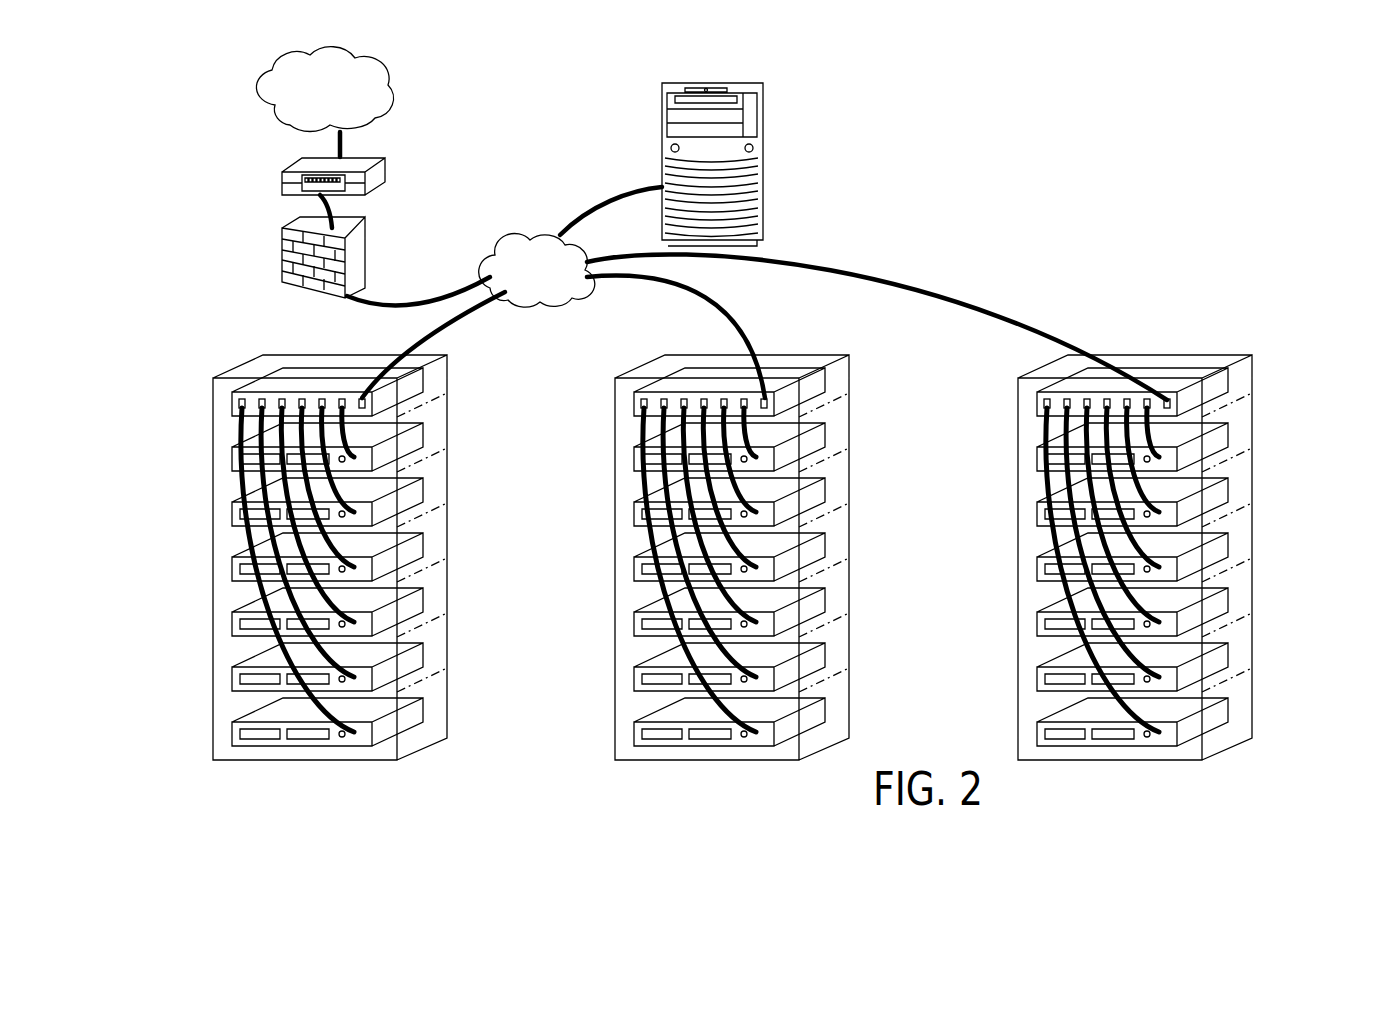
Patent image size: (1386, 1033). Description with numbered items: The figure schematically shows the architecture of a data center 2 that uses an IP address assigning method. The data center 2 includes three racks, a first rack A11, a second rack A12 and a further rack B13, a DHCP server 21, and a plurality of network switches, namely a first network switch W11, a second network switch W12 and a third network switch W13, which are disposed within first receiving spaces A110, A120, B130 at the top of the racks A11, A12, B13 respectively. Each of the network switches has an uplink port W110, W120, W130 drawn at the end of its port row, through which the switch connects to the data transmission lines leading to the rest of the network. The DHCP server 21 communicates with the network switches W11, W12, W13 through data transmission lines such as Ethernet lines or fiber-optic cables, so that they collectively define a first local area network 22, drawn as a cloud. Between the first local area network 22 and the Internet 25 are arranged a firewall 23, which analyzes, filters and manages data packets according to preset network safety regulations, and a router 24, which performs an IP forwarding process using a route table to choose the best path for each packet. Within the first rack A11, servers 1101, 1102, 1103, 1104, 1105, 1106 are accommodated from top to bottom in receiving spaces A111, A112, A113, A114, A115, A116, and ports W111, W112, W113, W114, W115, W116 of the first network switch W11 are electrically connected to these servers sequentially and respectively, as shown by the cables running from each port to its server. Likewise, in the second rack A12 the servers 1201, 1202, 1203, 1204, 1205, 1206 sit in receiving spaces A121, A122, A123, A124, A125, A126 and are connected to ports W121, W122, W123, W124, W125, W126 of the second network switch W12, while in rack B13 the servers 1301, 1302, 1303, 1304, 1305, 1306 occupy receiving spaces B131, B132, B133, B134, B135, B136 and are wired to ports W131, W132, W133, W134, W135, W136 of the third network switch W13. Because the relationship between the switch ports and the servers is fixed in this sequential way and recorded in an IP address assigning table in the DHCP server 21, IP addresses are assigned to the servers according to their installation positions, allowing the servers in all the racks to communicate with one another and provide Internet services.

The data center 2 is at (1203, 140).
The DHCP server 21 is at (764, 160).
The first local area network 22 is at (507, 244).
The firewall 23 is at (350, 238).
The router 24 is at (372, 158).
The Internet 25 is at (390, 97).
The first rack A11 is at (305, 760).
The second rack A12 is at (707, 760).
The rack B13 is at (1133, 760).
The first receiving space A110 is at (442, 378).
The first receiving space A120 is at (842, 378).
The first receiving space B130 is at (1248, 378).
The first network switch W11 is at (342, 397).
The second network switch W12 is at (770, 375).
The third network switch W13 is at (1173, 373).
The uplink port W110 is at (362, 397).
The uplink port W120 is at (770, 397).
The uplink port W130 is at (1175, 397).
The port W111 is at (322, 375).
The port W112 is at (302, 397).
The port W113 is at (282, 397).
The port W114 is at (262, 397).
The port W115 is at (242, 400).
The port W116 is at (238, 410).
The port W121 is at (743, 397).
The port W122 is at (725, 397).
The port W123 is at (703, 397).
The port W124 is at (683, 397).
The port W125 is at (662, 400).
The port W126 is at (640, 410).
The port W131 is at (1125, 397).
The port W132 is at (1108, 397).
The port W133 is at (1088, 397).
The port W134 is at (1068, 397).
The port W135 is at (1048, 400).
The port W136 is at (1043, 410).
The receiving space A111 is at (435, 448).
The receiving space A112 is at (435, 505).
The receiving space A113 is at (435, 560).
The receiving space A114 is at (435, 615).
The receiving space A115 is at (435, 668).
The receiving space A116 is at (435, 735).
The receiving space A121 is at (838, 448).
The receiving space A122 is at (837, 505).
The receiving space A123 is at (837, 560).
The receiving space A124 is at (837, 615).
The receiving space A125 is at (837, 668).
The receiving space A126 is at (837, 735).
The receiving space B131 is at (1240, 448).
The receiving space B132 is at (1240, 505).
The receiving space B133 is at (1240, 560).
The receiving space B134 is at (1240, 615).
The receiving space B135 is at (1240, 668).
The receiving space B136 is at (1240, 735).
The server 1101 is at (233, 458).
The server 1102 is at (233, 513).
The server 1103 is at (233, 566).
The server 1104 is at (233, 621).
The server 1105 is at (233, 676).
The server 1106 is at (233, 731).
The server 1201 is at (637, 450).
The server 1202 is at (635, 513).
The server 1203 is at (635, 566).
The server 1204 is at (635, 621).
The server 1205 is at (635, 676).
The server 1206 is at (635, 731).
The server 1301 is at (1038, 456).
The server 1302 is at (1038, 513).
The server 1303 is at (1038, 566).
The server 1304 is at (1038, 621).
The server 1305 is at (1038, 676).
The server 1306 is at (1038, 731).